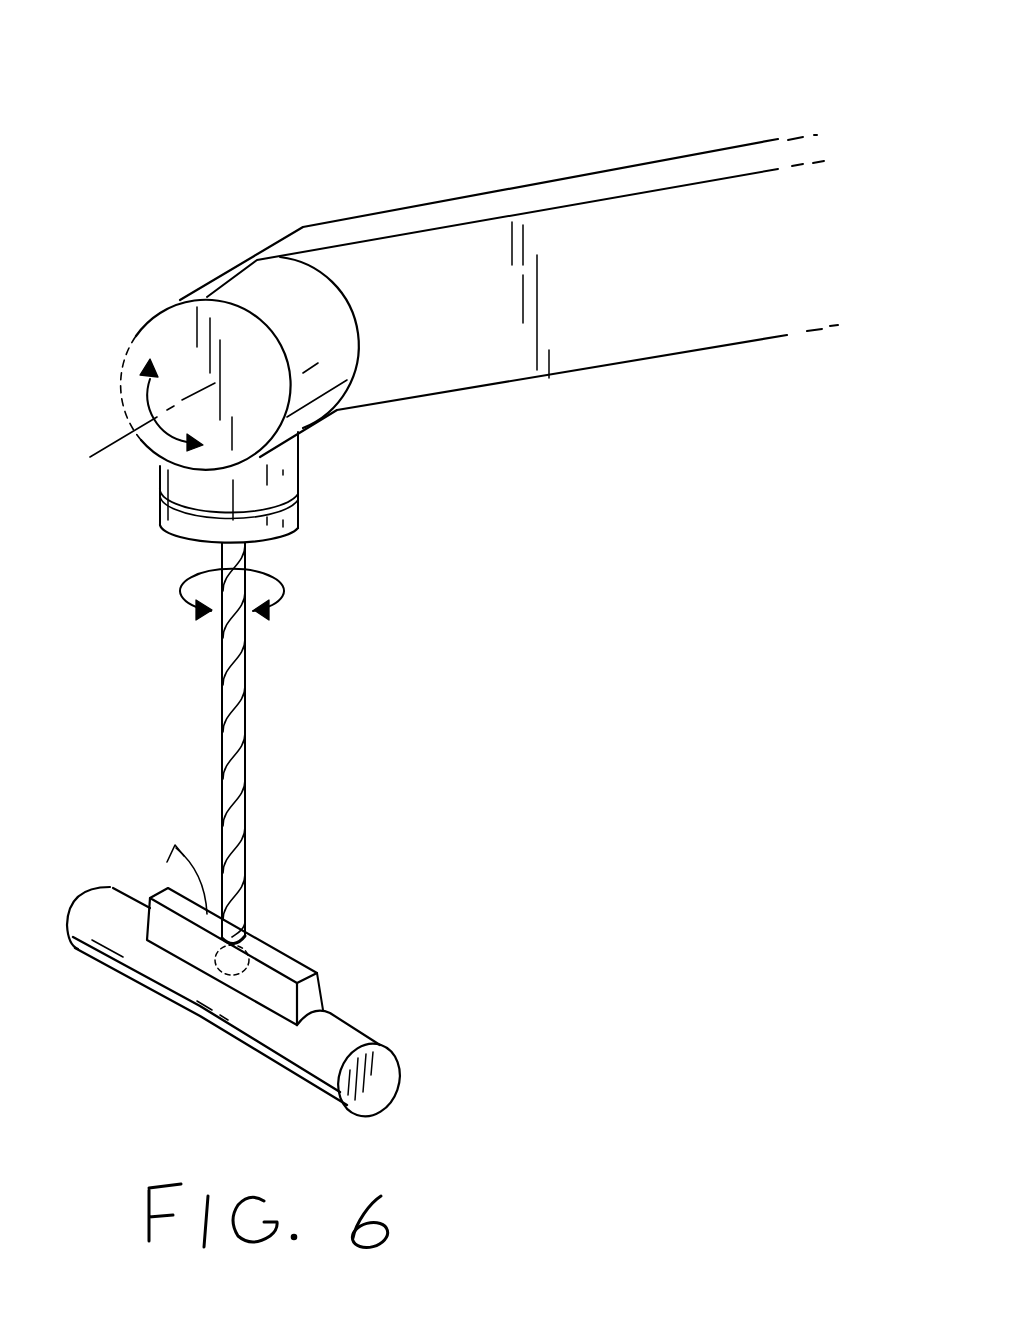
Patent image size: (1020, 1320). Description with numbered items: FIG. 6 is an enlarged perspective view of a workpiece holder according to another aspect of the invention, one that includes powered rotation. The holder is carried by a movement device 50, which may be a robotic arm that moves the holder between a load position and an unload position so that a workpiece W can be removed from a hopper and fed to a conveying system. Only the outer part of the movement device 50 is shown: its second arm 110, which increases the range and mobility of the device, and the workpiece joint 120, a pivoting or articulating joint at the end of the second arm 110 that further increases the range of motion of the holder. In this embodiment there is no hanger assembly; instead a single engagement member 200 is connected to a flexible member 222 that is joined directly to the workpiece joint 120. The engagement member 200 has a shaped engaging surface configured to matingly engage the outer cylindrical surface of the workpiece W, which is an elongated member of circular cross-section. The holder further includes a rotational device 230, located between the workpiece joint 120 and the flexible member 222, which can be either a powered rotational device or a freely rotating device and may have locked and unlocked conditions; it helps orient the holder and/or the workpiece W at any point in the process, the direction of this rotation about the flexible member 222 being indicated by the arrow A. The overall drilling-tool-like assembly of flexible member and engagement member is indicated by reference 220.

The movement device 50 is at (688, 118).
The second arm 110 is at (573, 190).
The workpiece joint 120 is at (177, 323).
The rotational device 230 is at (287, 465).
The flexible member 222 is at (228, 689).
The rotation direction A is at (288, 588).
The tool assembly 220 is at (358, 752).
The engagement member 200 is at (298, 963).
The workpiece W is at (158, 982).